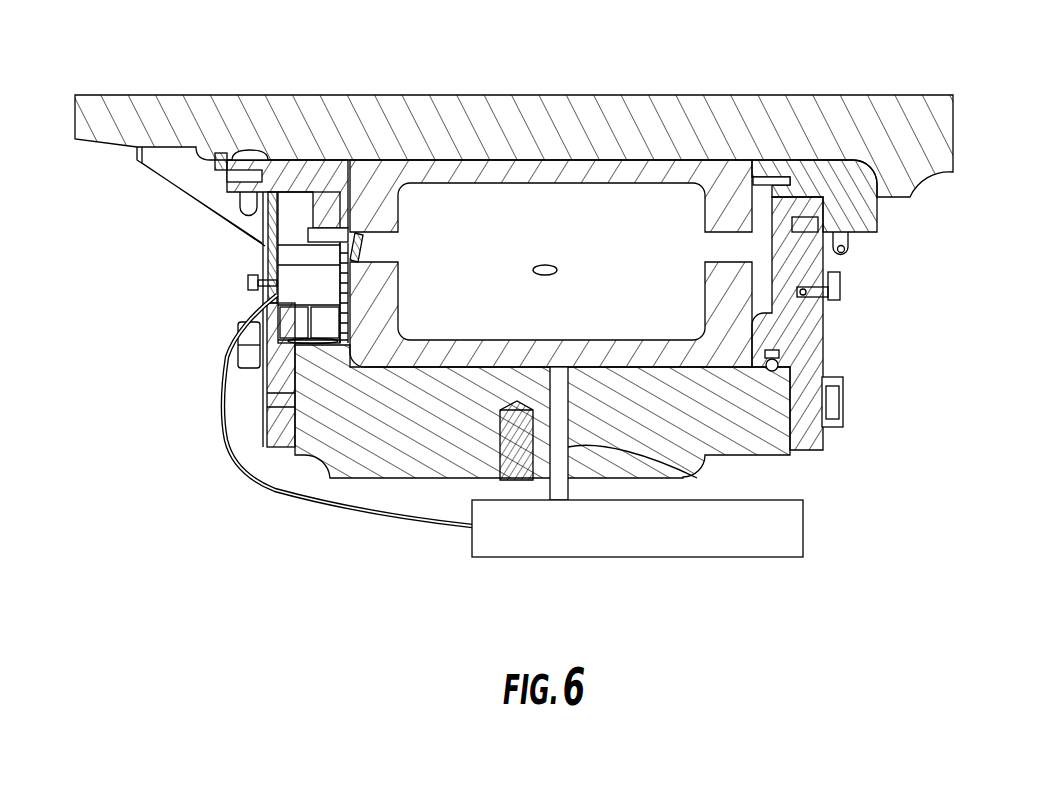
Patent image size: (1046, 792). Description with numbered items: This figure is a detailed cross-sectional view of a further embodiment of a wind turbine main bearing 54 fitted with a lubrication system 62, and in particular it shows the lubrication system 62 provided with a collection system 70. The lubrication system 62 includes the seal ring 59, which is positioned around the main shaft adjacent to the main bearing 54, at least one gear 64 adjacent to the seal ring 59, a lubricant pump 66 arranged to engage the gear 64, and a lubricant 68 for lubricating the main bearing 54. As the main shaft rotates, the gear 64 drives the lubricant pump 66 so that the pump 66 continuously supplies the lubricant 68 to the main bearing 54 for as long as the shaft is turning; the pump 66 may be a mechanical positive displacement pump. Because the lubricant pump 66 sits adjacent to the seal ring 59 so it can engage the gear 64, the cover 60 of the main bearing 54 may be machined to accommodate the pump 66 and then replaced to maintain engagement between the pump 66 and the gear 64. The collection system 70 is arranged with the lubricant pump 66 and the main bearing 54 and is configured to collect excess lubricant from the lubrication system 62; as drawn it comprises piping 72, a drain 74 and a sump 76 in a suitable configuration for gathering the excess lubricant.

The main bearing 54 is at (650, 225).
The seal ring 59 is at (292, 162).
The cover 60 is at (285, 428).
The lubrication system 62 is at (105, 268).
The gear 64 is at (263, 243).
The lubricant pump 66 is at (290, 300).
The lubricant 68 is at (551, 547).
The collection system 70 is at (215, 427).
The piping 72 is at (288, 500).
The drain 74 is at (690, 471).
The sump 76 is at (671, 542).